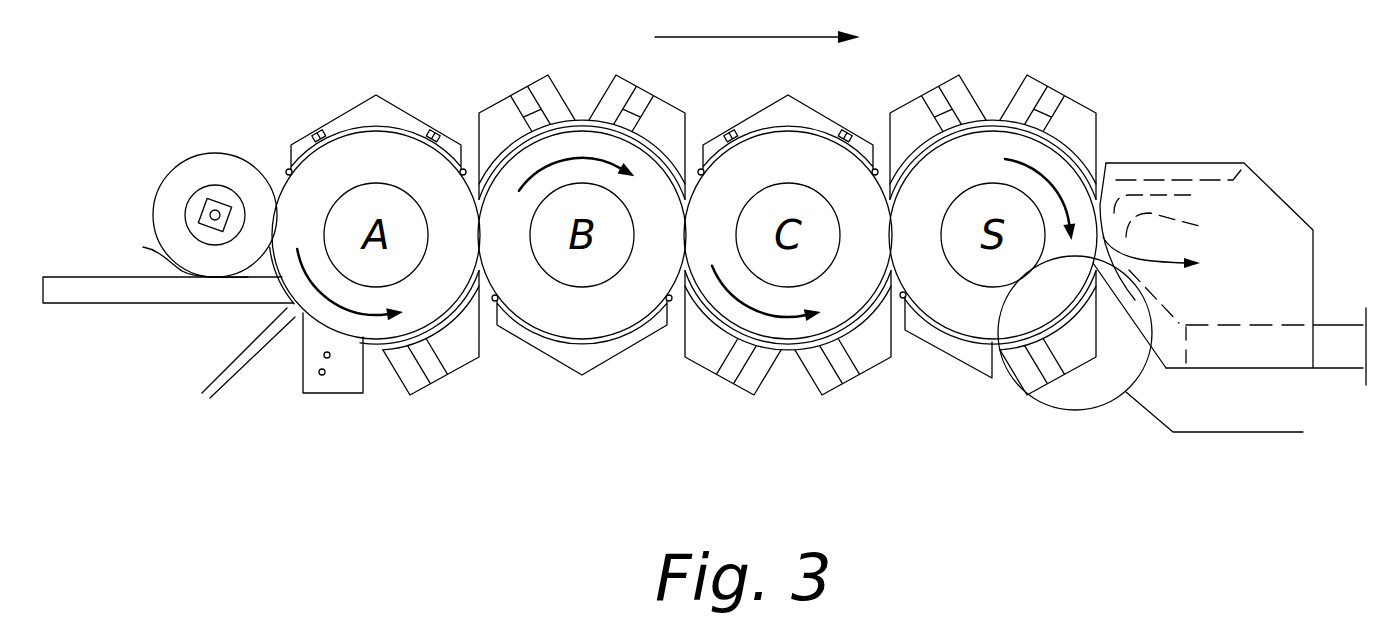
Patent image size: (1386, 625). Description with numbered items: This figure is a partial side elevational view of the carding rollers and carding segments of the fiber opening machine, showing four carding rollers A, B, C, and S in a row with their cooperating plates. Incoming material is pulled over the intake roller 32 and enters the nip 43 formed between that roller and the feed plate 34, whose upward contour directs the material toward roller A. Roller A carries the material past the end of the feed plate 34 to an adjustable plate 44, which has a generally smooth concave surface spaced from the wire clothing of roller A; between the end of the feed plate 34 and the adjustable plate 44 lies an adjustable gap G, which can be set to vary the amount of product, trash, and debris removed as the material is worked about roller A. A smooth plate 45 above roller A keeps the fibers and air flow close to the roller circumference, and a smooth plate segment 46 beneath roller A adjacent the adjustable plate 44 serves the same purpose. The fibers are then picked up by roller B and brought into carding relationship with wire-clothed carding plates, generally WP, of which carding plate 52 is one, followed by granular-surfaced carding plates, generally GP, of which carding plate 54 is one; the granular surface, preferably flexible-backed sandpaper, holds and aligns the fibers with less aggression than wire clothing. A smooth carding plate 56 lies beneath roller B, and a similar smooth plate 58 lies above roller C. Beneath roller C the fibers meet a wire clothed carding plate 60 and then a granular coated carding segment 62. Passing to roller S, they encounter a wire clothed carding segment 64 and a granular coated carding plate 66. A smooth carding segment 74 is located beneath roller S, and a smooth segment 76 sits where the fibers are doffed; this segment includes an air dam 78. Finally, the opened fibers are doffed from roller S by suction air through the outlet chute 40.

The intake roller 32 is at (217, 167).
The feed plate 34 is at (78, 287).
The nip 43 is at (177, 253).
The adjustable gap G is at (232, 395).
The adjustable plate 44 is at (335, 383).
The smooth plate 45 is at (383, 97).
The smooth plate segment 46 is at (422, 378).
The carding plates with wire clothing WP is at (500, 84).
The carding plates with granular carding surfaces GP is at (664, 88).
The carding plate 52 is at (548, 90).
The carding plate 54 is at (682, 126).
The smooth carding plate 56 is at (580, 365).
The smooth plate 58 is at (805, 118).
The wire clothed carding plate 60 is at (742, 380).
The granular coated carding segment 62 is at (820, 378).
The wire clothed carding segment 64 is at (965, 93).
The granular coated carding plate 66 is at (1052, 95).
The smooth carding segment 74 is at (967, 353).
The smooth segment 76 is at (1035, 382).
The air dam 78 is at (1095, 278).
The outlet chute 40 is at (1268, 197).